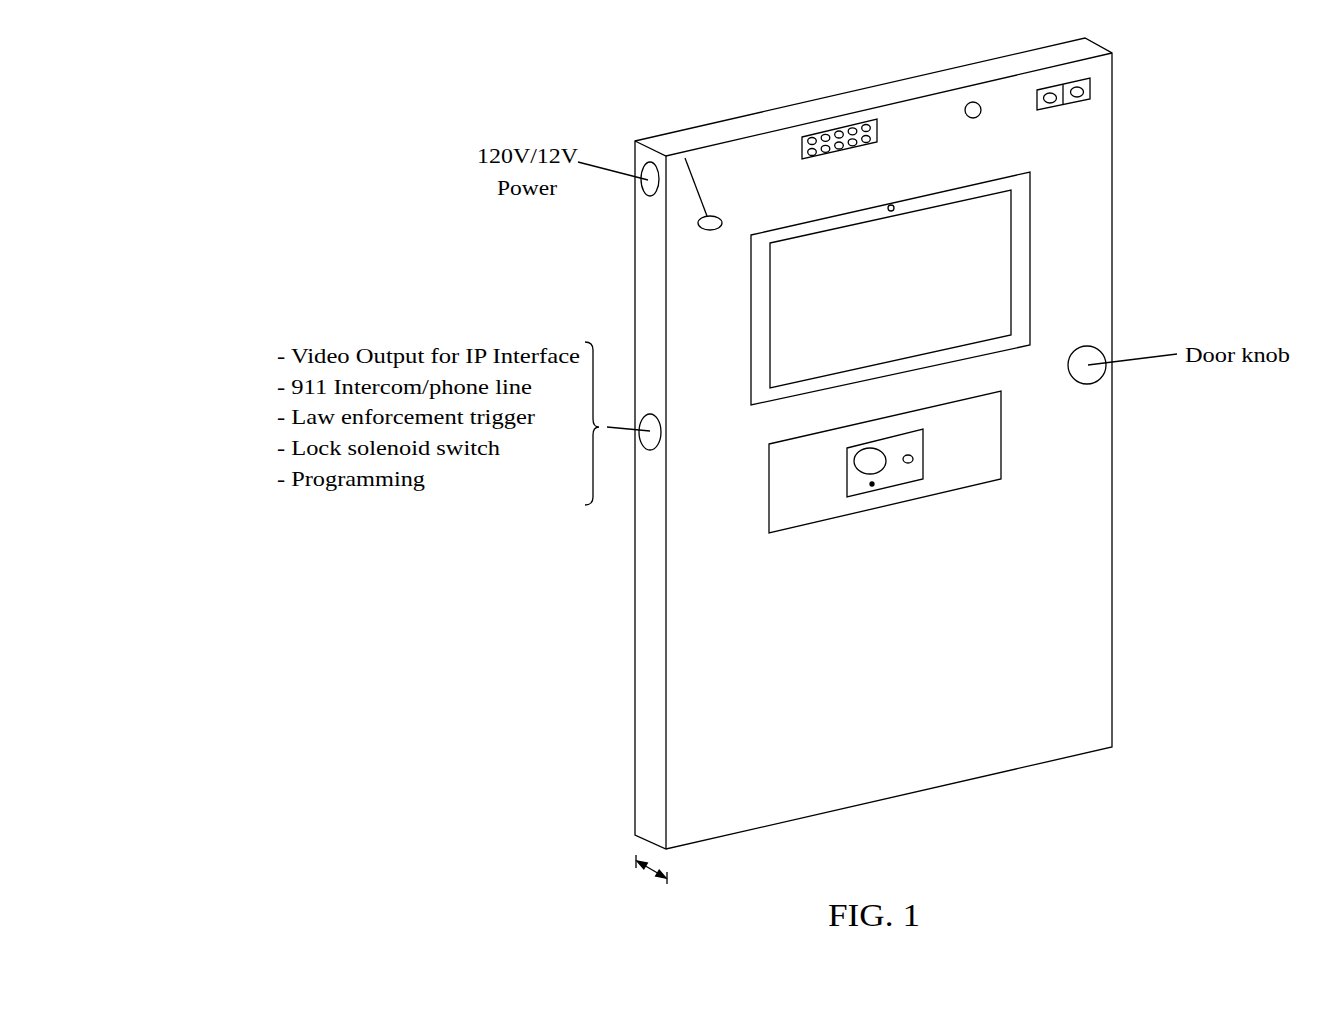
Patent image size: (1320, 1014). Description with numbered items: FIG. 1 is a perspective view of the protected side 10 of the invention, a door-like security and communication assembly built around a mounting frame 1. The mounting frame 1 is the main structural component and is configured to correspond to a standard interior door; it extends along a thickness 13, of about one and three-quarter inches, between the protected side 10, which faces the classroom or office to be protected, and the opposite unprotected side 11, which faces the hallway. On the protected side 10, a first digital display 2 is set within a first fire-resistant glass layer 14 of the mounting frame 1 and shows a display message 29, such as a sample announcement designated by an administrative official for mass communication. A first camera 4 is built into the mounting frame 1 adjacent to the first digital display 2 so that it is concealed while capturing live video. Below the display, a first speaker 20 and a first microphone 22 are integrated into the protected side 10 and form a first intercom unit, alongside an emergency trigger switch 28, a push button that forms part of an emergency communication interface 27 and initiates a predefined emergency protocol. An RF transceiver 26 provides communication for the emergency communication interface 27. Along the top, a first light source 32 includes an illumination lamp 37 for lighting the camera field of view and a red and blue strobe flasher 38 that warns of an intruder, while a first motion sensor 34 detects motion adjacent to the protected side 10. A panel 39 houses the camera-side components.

The mounting frame 1 is at (1098, 575).
The first digital display 2 is at (1002, 248).
The first camera 4 is at (891, 205).
The protected side 10 is at (1122, 730).
The unprotected side 11 is at (621, 743).
The thickness 13 is at (645, 876).
The first fire-resistant glass layer 14 is at (1018, 183).
The first speaker 20 is at (868, 452).
The first microphone 22 is at (872, 487).
The radio frequency (RF) transceiver 26 is at (704, 185).
The emergency communication interface 27 is at (910, 480).
The emergency trigger switch 28 is at (915, 458).
The display message 29 is at (955, 256).
The first light source 32 is at (772, 147).
The first motion sensor 34 is at (967, 102).
The illumination lamp 37 is at (838, 127).
The red and blue strobe flasher 38 is at (1048, 87).
The camera panel 39 is at (769, 533).